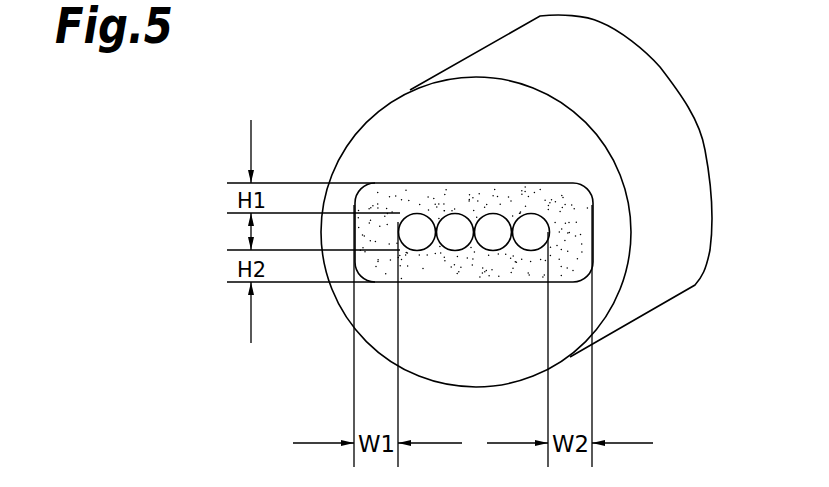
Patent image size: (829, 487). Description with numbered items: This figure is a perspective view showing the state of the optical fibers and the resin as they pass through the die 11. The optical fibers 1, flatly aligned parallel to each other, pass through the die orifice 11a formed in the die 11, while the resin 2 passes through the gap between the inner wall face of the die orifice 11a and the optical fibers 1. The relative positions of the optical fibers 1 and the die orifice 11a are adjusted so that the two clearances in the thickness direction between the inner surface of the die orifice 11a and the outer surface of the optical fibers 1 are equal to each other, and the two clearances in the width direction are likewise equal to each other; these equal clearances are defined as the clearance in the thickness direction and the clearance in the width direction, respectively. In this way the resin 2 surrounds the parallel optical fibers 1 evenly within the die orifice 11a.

The optical fibers 1 is at (456, 215).
The resin 2 is at (507, 277).
The die 11 is at (647, 307).
The die orifice 11a is at (440, 283).